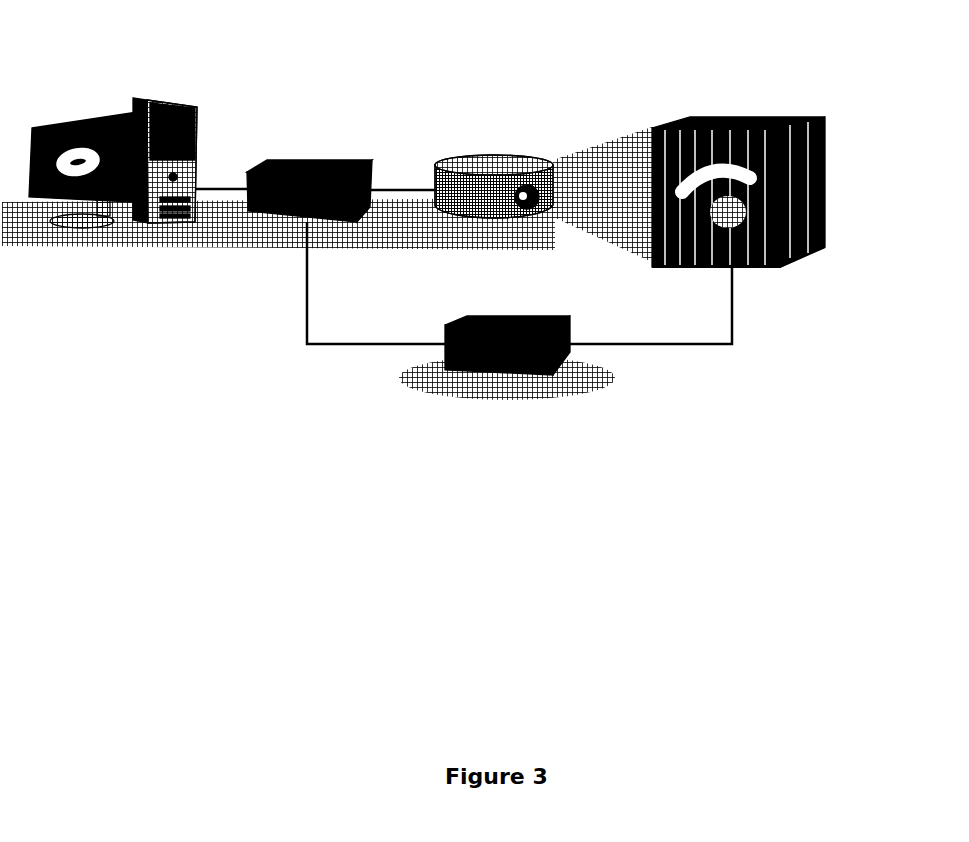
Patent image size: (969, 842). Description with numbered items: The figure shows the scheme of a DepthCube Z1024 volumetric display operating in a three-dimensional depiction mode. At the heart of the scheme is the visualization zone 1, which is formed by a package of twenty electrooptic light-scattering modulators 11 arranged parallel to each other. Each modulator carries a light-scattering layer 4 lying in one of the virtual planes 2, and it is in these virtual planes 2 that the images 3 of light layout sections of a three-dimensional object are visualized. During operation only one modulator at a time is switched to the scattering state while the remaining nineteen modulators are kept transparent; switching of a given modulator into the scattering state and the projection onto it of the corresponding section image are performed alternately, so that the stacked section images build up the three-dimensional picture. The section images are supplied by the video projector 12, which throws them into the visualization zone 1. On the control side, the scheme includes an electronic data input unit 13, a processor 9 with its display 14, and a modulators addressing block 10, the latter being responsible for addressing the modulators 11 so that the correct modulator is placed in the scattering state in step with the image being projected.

The visualization zone 1 is at (746, 199).
The virtual planes 2 is at (786, 121).
The images of light layout sections 3 is at (787, 258).
The light-scattering layers 4 is at (786, 121).
The processor 9 is at (140, 222).
The modulators addressing block 10 is at (475, 357).
The modulators 11 is at (710, 137).
The video projector 12 is at (502, 160).
The electronic data input unit 13 is at (340, 165).
The display 14 is at (88, 118).